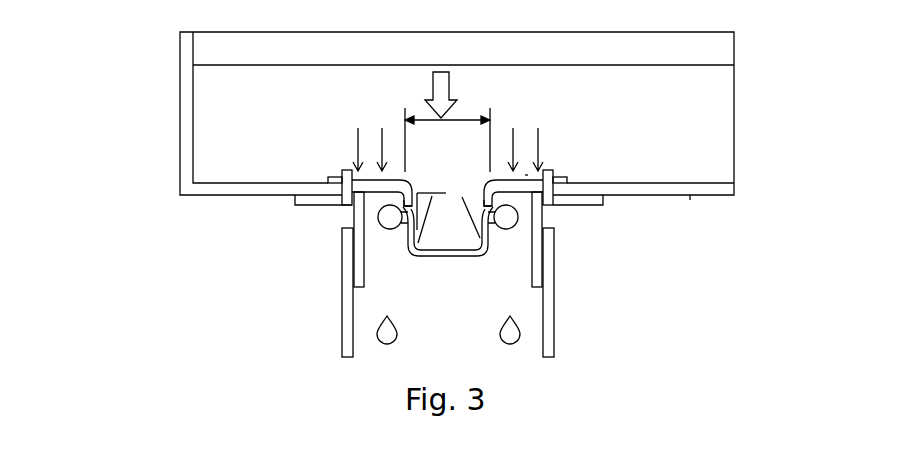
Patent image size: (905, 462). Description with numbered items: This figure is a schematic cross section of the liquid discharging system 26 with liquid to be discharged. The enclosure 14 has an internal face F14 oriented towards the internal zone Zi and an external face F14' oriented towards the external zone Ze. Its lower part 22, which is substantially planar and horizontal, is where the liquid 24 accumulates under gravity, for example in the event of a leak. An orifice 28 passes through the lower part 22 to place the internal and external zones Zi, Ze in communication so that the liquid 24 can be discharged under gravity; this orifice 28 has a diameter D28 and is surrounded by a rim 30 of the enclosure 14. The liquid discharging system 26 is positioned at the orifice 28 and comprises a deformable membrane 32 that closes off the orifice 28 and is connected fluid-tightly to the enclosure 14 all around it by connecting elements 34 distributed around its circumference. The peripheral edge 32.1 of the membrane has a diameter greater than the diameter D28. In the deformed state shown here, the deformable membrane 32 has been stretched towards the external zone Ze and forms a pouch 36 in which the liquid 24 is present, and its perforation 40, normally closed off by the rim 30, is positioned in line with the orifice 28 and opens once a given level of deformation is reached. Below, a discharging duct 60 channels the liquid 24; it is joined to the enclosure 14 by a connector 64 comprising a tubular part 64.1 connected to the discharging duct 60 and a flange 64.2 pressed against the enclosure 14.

The enclosure 14 is at (180, 117).
The internal face F14 is at (210, 48).
The external face F14' is at (119, 76).
The internal zone Zi is at (698, 54).
The external zone Ze is at (702, 250).
The liquid 24 is at (672, 117).
The lower part 22 is at (690, 195).
The liquid discharging system 26 is at (588, 255).
The orifice 28 is at (433, 242).
The diameter of the orifice D28 is at (447, 122).
The rim 30 is at (528, 174).
The deformable membrane 32 is at (405, 178).
The peripheral edge 32.1 is at (560, 180).
The connecting elements 34 is at (352, 170).
The pouch 36 is at (440, 257).
The perforation 40 is at (404, 226).
The discharging duct 60 is at (342, 330).
The connector 64 is at (353, 211).
The tubular part 64.1 is at (353, 283).
The flange 64.2 is at (297, 205).